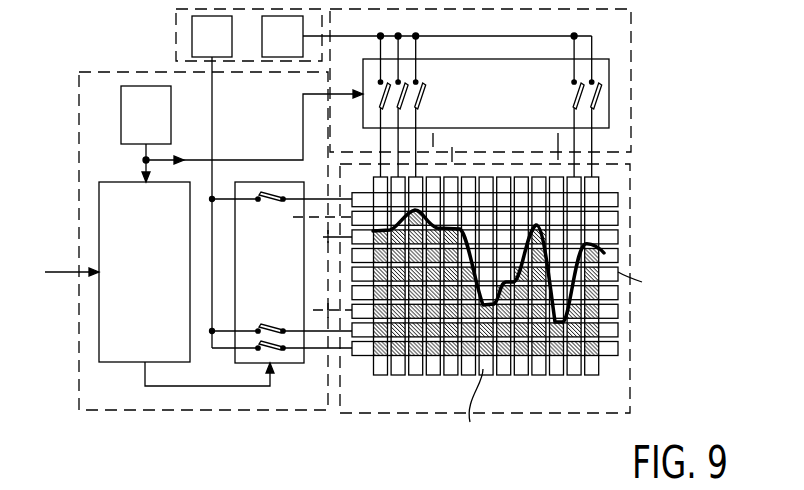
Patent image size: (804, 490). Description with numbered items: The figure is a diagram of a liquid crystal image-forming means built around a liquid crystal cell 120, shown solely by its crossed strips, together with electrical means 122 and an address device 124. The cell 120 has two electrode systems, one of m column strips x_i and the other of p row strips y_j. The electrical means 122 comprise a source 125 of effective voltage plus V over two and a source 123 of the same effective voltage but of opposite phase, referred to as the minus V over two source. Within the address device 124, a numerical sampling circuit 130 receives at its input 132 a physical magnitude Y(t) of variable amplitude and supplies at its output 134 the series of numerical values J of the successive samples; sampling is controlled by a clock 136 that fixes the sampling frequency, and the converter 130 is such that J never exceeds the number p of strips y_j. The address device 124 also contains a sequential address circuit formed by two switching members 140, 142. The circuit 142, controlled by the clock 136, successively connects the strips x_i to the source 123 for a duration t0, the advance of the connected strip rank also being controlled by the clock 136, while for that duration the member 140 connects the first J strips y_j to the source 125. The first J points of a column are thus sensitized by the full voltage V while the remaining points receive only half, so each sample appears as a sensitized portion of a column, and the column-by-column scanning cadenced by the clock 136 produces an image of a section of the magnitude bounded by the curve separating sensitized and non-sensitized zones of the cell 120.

The liquid crystal cell 120 is at (383, 413).
The electrical means 122 is at (176, 53).
The voltage source of -V/2 123 is at (292, 48).
The address device 124 is at (97, 72).
The voltage source of +V/2 125 is at (222, 48).
The numerical sampling circuit 130 is at (148, 284).
The input 132 is at (68, 272).
The output 134 is at (145, 378).
The clock 136 is at (150, 126).
The switching member 140 is at (278, 284).
The switching member 142 is at (609, 77).